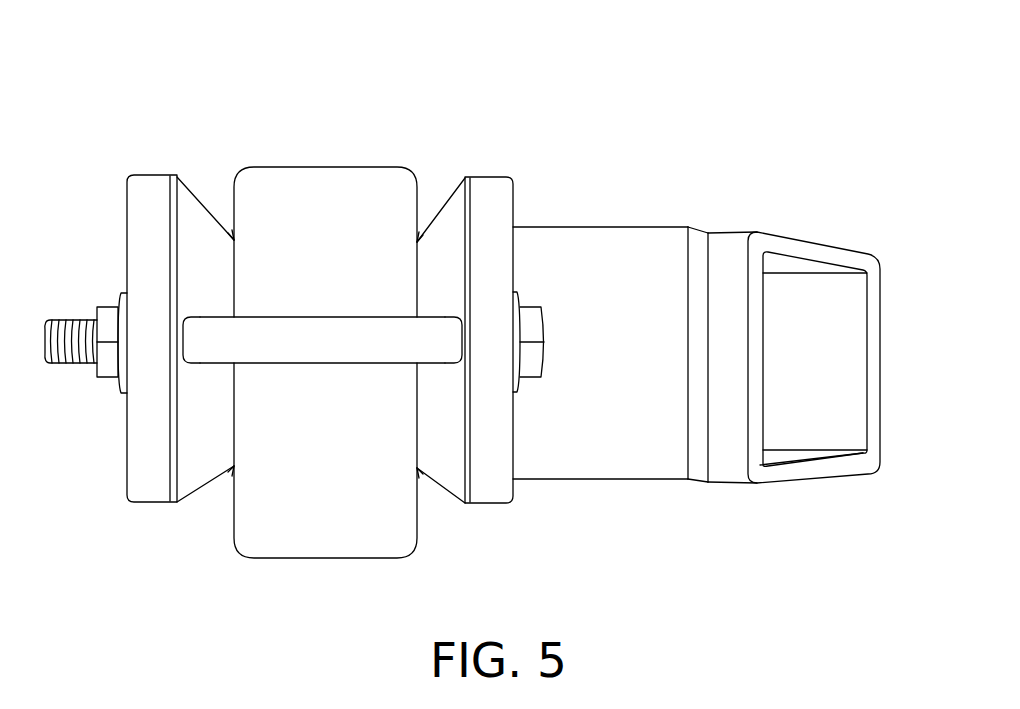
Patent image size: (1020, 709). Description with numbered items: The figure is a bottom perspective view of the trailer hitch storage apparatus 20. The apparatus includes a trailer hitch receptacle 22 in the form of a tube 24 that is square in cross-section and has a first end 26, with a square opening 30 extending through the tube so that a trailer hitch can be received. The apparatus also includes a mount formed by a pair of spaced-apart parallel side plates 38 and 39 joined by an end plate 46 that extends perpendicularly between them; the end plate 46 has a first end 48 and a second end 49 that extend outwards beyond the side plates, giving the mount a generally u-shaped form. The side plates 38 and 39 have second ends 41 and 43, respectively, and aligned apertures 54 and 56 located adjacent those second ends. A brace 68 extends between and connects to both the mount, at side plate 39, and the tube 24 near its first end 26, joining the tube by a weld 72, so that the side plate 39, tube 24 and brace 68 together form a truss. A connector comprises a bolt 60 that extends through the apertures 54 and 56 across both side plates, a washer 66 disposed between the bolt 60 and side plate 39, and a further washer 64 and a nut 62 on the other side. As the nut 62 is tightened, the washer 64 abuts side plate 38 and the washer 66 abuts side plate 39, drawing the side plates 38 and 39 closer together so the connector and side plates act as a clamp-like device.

The trailer hitch storage apparatus 20 is at (601, 111).
The trailer hitch receptacle 22 is at (760, 500).
The tube 24 is at (732, 448).
The first end 26 is at (815, 487).
The opening 30 is at (810, 428).
The side plate 38 is at (218, 426).
The side plate 39 is at (461, 427).
The second end 41 is at (150, 478).
The second end 43 is at (492, 481).
The end plate 46 is at (345, 231).
The first end 48 is at (327, 560).
The second end 49 is at (327, 167).
The aperture 54 is at (185, 322).
The aperture 56 is at (461, 322).
The bolt 60 is at (338, 354).
The nut 62 is at (102, 307).
The washer 64 is at (120, 305).
The washer 66 is at (522, 302).
The brace 68 is at (620, 359).
The weld 72 is at (702, 262).